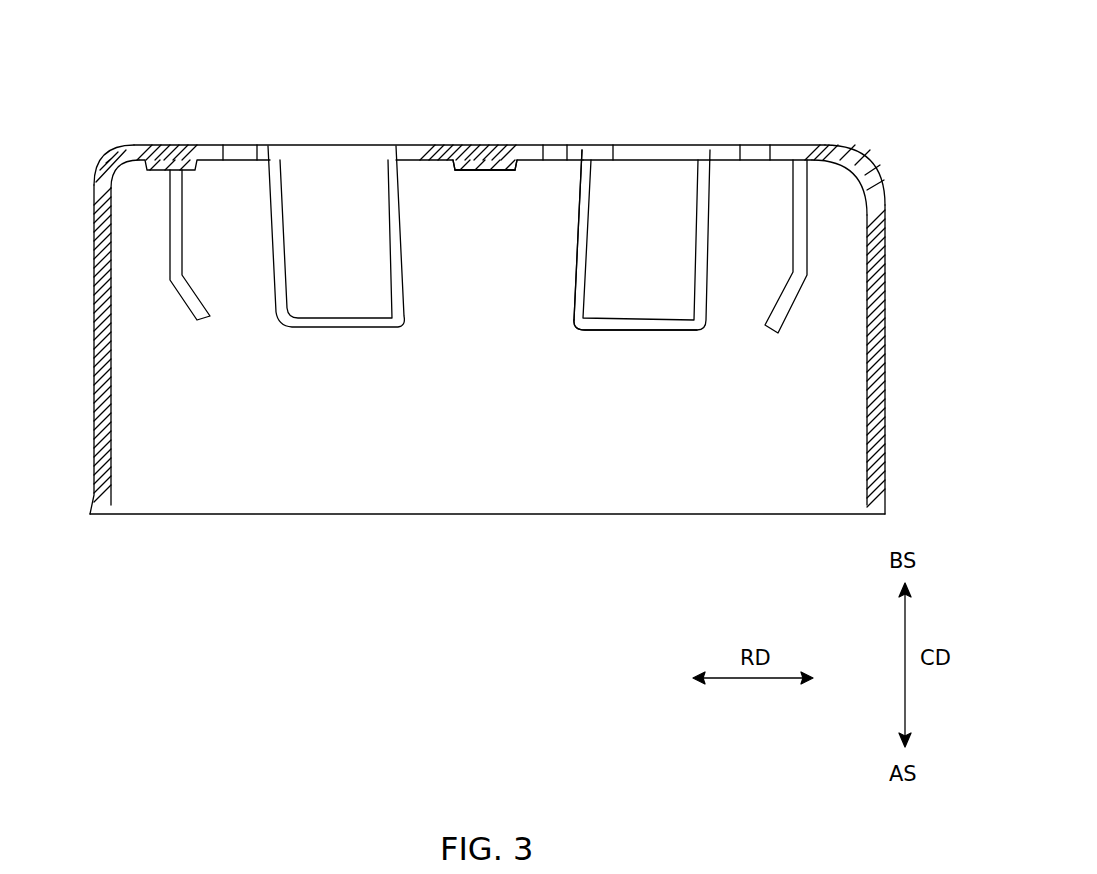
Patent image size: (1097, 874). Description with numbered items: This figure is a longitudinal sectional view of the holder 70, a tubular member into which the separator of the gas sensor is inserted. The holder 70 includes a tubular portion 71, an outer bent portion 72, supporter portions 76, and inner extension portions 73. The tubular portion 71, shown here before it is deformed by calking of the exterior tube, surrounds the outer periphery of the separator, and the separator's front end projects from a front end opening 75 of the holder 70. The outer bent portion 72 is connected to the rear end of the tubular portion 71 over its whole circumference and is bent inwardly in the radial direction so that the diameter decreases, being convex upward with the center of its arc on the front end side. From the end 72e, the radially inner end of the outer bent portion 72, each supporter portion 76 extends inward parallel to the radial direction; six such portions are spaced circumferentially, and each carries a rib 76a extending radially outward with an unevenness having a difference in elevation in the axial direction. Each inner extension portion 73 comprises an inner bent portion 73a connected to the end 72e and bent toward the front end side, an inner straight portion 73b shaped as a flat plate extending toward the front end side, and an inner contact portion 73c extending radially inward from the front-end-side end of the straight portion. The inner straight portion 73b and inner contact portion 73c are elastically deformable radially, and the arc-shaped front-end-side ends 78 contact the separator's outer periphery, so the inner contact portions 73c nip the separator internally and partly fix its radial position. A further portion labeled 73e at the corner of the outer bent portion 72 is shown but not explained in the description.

The holder 70 is at (477, 305).
The tubular portion 71 is at (93, 315).
The outer bent portion 72 is at (107, 166).
The end of outer bent portion 72e is at (139, 140).
The inner extension portion 73 is at (331, 198).
The inner bent portion 73a is at (646, 157).
The inner straight portion 73b is at (605, 245).
The inner contact portion 73c is at (622, 300).
The corner portion 73e is at (838, 146).
The front end opening 75 is at (610, 515).
The supporter portion 76 is at (510, 167).
The rib 76a is at (478, 165).
The front-end-side end 78 is at (640, 328).